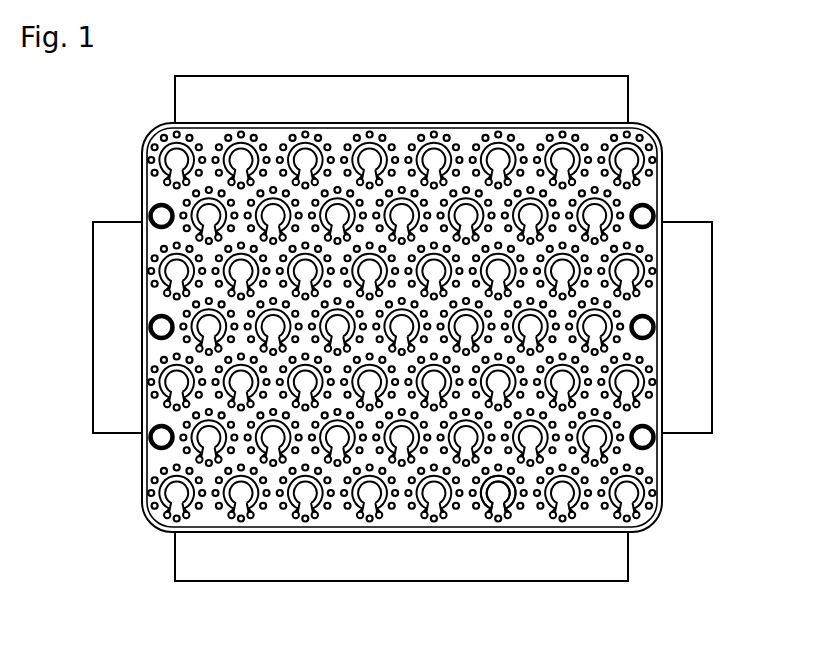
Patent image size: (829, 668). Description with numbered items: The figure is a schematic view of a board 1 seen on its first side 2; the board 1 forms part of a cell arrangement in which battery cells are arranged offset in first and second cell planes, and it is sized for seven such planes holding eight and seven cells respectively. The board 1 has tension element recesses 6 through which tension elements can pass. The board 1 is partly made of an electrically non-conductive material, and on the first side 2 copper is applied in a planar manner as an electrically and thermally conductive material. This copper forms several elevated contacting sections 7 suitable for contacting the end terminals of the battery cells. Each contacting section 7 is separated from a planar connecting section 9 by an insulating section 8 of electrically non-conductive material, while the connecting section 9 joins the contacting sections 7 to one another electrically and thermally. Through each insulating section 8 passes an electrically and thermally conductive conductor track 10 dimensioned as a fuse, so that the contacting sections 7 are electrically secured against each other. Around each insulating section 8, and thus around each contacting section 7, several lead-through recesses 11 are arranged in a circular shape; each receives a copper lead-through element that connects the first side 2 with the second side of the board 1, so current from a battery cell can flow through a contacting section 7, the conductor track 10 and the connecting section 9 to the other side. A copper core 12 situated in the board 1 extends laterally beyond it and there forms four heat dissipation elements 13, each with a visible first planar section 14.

The board 1 is at (570, 55).
The first side 2 is at (652, 187).
The tension element recess 6 is at (161, 216).
The contacting section 7 is at (513, 513).
The insulating section 8 is at (480, 510).
The connecting section 9 is at (288, 523).
The conductor track 10 is at (497, 522).
The lead-through recess 11 is at (227, 520).
The core 12 is at (343, 87).
The heat dissipation element 13 is at (393, 87).
The first planar section 14 is at (440, 87).